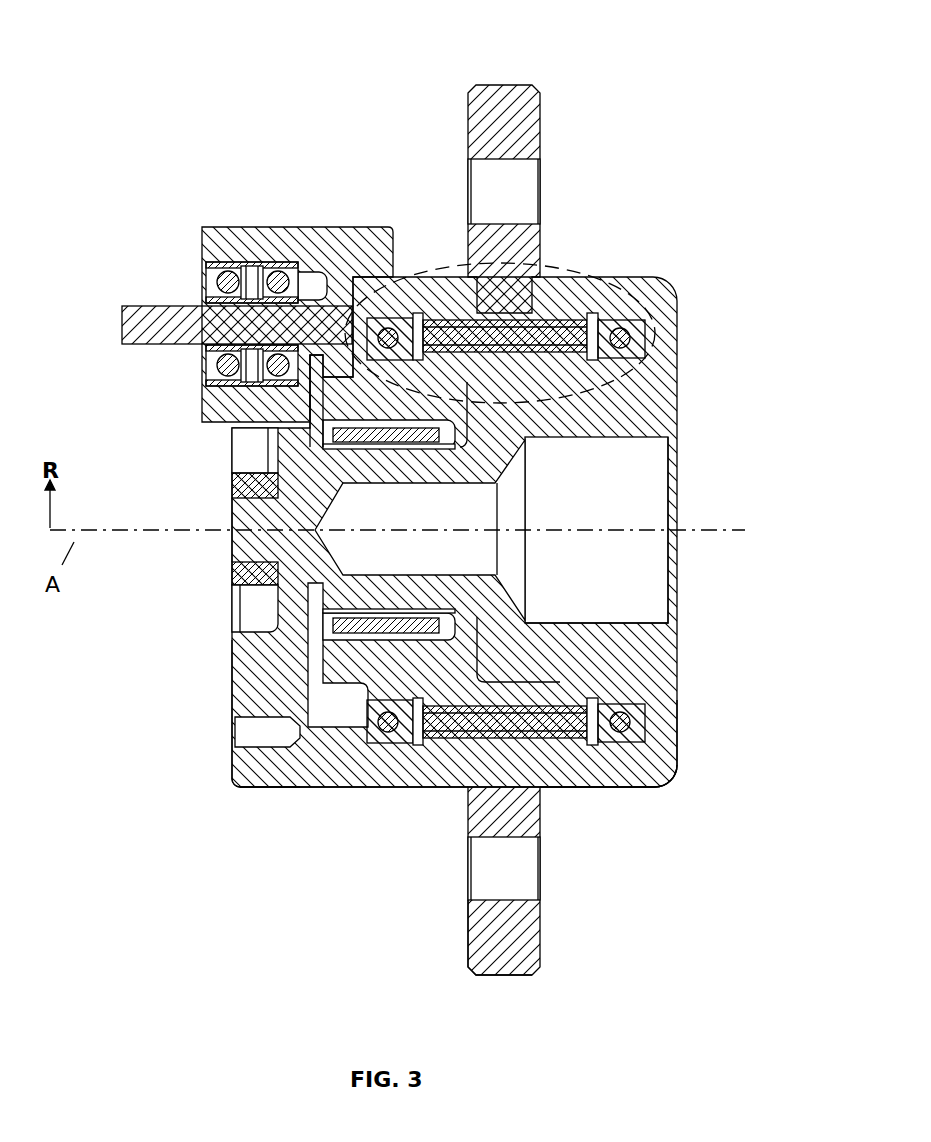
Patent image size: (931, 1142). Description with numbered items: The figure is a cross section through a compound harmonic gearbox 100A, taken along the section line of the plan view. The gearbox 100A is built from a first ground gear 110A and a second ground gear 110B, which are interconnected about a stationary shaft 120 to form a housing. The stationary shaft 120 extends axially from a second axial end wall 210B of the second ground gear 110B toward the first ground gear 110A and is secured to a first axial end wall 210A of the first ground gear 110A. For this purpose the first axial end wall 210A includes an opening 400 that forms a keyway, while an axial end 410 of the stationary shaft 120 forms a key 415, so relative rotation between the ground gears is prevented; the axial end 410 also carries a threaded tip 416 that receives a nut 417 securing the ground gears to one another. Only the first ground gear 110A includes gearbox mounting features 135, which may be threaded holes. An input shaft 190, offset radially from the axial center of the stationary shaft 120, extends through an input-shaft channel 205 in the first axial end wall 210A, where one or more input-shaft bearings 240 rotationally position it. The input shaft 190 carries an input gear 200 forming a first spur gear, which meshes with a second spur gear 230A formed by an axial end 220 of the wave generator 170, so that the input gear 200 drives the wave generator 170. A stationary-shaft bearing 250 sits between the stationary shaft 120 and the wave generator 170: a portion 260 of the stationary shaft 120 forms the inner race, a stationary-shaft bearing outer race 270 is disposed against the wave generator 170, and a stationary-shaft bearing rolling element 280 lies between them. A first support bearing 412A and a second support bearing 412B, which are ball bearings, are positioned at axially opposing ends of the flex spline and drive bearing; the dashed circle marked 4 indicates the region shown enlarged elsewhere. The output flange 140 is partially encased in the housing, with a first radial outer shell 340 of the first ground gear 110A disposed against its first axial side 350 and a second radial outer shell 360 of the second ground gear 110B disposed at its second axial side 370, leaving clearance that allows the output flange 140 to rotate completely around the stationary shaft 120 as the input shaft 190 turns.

The compound harmonic gearbox 100A is at (150, 38).
The input gear 200 is at (358, 300).
The first support bearing 412A is at (383, 318).
The detail region 4 is at (566, 266).
The second support bearing 412B is at (643, 310).
The input-shaft bearings 240 is at (205, 282).
The input shaft 190 is at (133, 320).
The second axial end wall 210B is at (683, 373).
The input-shaft channel 205 is at (212, 378).
The second spur gear 230A is at (322, 425).
The stationary-shaft bearing outer race 270 is at (240, 462).
The threaded tip 416 is at (240, 488).
The axial end of the stationary shaft 410 is at (235, 540).
The opening 400 is at (237, 578).
The nut 417 is at (237, 600).
The first axial end wall 210A is at (233, 660).
The gearbox mounting features 135 is at (240, 732).
The first ground gear 110A is at (272, 782).
The first radial outer shell 340 is at (362, 770).
The second axial side 370 is at (548, 815).
The second radial outer shell 360 is at (640, 787).
The first axial side 350 is at (468, 932).
The output flange 140 is at (538, 930).
The portion of the stationary shaft 260 is at (353, 455).
The stationary-shaft bearing rolling element 280 is at (430, 446).
The key 415 is at (305, 572).
The stationary-shaft bearing 250 is at (393, 449).
The axial end of the wave generator 220 is at (470, 440).
The stationary shaft 120 is at (615, 622).
The wave generator 170 is at (510, 692).
The second ground gear 110B is at (660, 722).